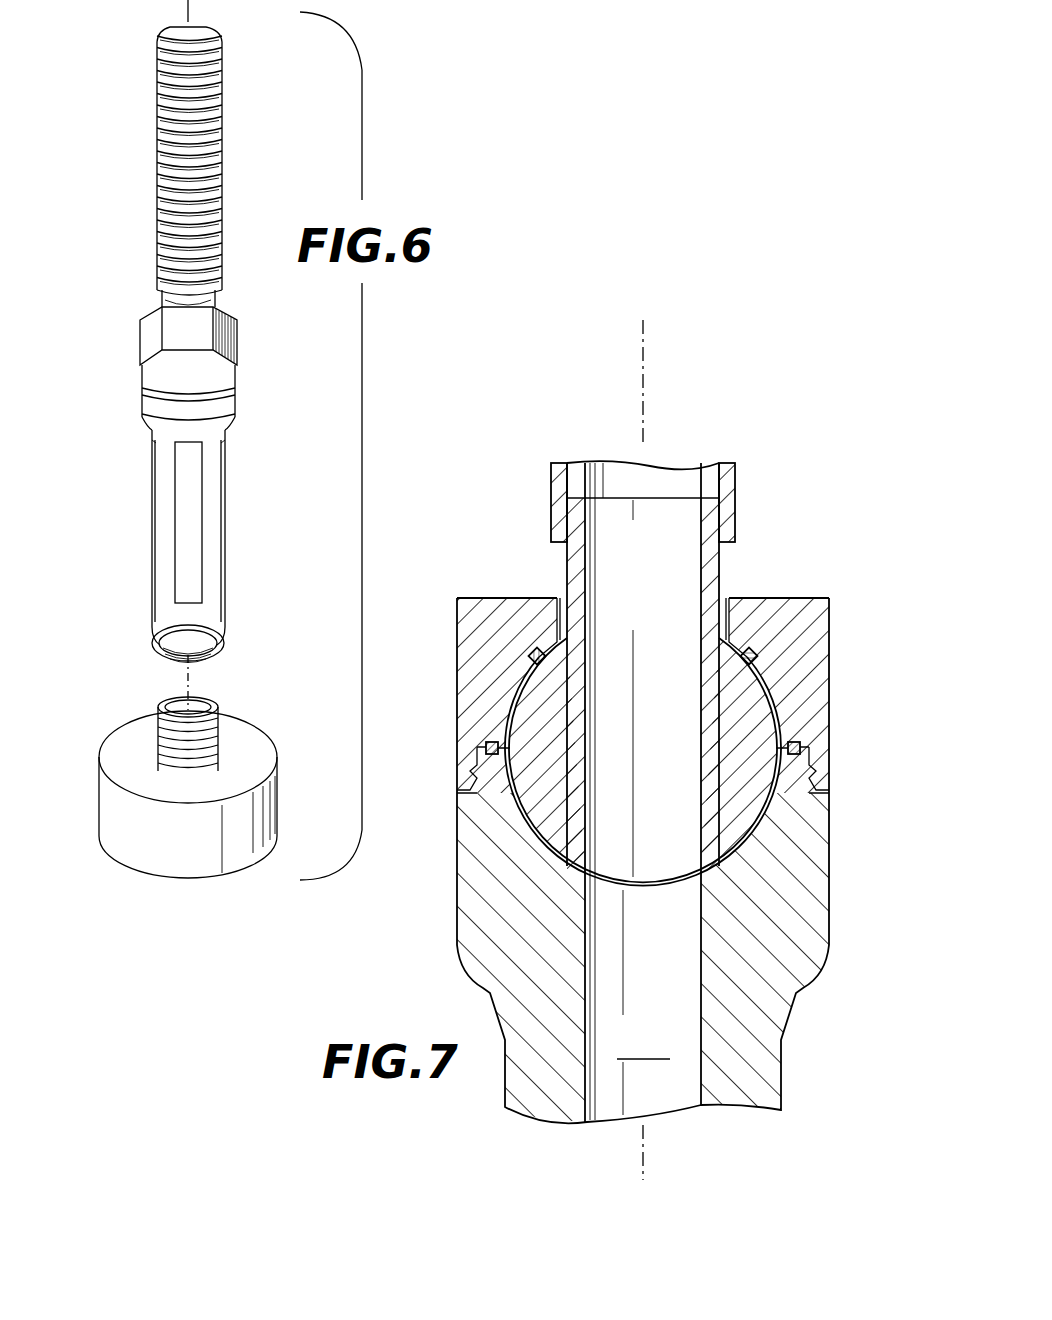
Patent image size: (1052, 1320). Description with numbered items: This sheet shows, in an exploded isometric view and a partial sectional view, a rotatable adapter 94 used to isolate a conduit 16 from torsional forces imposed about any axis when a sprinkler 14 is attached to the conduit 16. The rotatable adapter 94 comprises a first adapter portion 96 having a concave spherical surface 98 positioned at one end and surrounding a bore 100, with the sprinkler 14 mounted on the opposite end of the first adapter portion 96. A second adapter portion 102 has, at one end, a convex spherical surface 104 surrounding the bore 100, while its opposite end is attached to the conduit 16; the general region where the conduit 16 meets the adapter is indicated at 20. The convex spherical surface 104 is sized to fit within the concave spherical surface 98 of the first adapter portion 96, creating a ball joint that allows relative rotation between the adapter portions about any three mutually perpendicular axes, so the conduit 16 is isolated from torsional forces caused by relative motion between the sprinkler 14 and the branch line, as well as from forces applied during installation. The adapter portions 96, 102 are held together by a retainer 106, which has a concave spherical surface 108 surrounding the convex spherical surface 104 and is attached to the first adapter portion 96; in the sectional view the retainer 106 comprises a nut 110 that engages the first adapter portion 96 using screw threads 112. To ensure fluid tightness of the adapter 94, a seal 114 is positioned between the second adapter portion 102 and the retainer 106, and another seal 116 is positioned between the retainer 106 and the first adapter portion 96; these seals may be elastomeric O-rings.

In FIG. 6, the sprinkler 14 is at (106, 793).
In FIG. 6, the conduit 16 is at (224, 86).
In FIG. 6, the adapter 20 is at (118, 303).
In FIG. 6, the rotatable adapter 94 is at (250, 365).
In FIG. 7, the rotatable adapter 94 is at (770, 508).
In FIG. 6, the first adapter portion 96 is at (222, 535).
In FIG. 7, the first adapter portion 96 is at (636, 820).
In FIG. 7, the concave spherical surface 98 is at (512, 858).
In FIG. 6, the bore 100 is at (180, 650).
In FIG. 7, the bore 100 is at (632, 791).
In FIG. 6, the second adapter portion 102 is at (180, 300).
In FIG. 7, the second adapter portion 102 is at (715, 580).
In FIG. 7, the convex spherical surface 104 is at (535, 795).
In FIG. 7, the retainer 106 is at (505, 605).
In FIG. 7, the concave spherical surface 108 is at (518, 690).
In FIG. 7, the nut 110 is at (780, 612).
In FIG. 7, the screw threads 112 is at (818, 770).
In FIG. 7, the seal 114 is at (765, 662).
In FIG. 7, the seal 116 is at (790, 740).